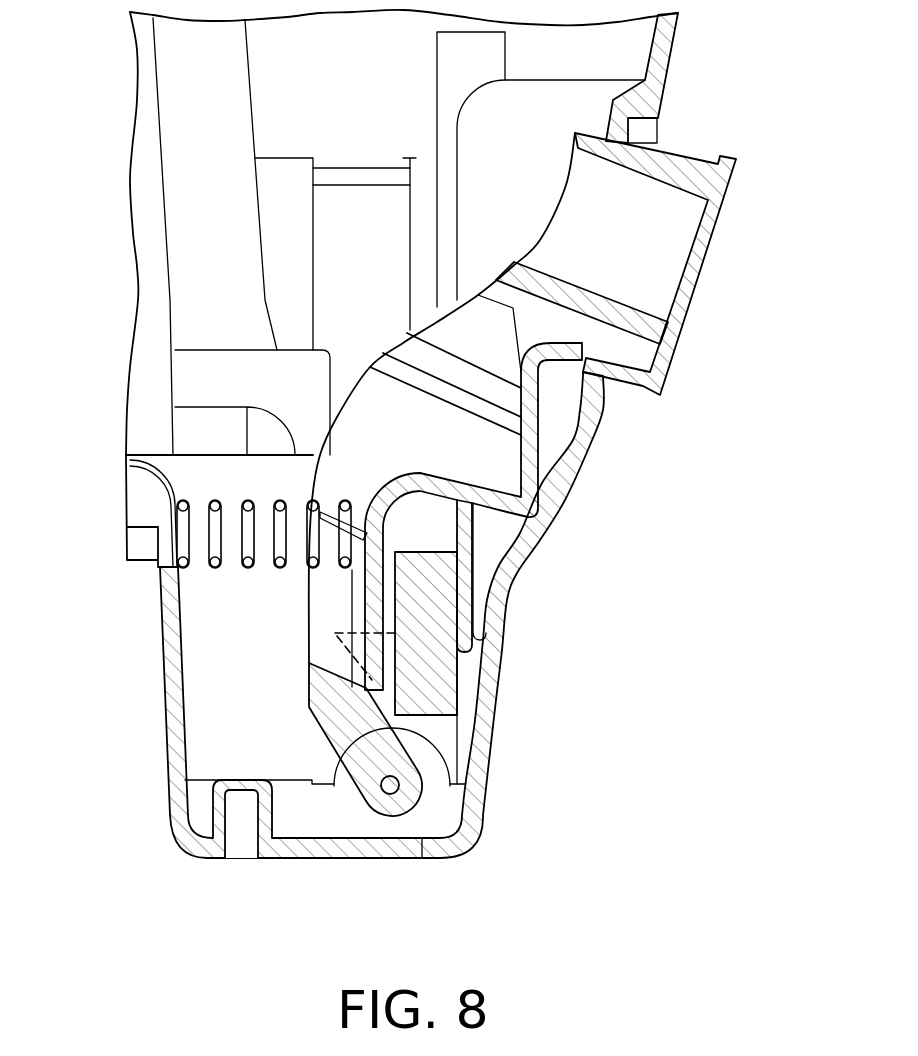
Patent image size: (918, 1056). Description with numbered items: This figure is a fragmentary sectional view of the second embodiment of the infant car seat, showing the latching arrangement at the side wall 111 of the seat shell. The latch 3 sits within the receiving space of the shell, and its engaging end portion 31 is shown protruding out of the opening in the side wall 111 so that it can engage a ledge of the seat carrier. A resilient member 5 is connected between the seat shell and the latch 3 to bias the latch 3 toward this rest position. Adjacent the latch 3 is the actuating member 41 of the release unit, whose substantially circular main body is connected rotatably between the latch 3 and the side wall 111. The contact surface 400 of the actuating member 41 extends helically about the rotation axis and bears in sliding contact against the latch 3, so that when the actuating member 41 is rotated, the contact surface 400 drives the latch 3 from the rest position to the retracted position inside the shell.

The latch 3 is at (372, 405).
The resilient member 5 is at (245, 566).
The engaging end portion 31 is at (688, 305).
The actuating member 41 is at (447, 663).
The side wall 111 is at (508, 602).
The contact surface 400 is at (352, 653).